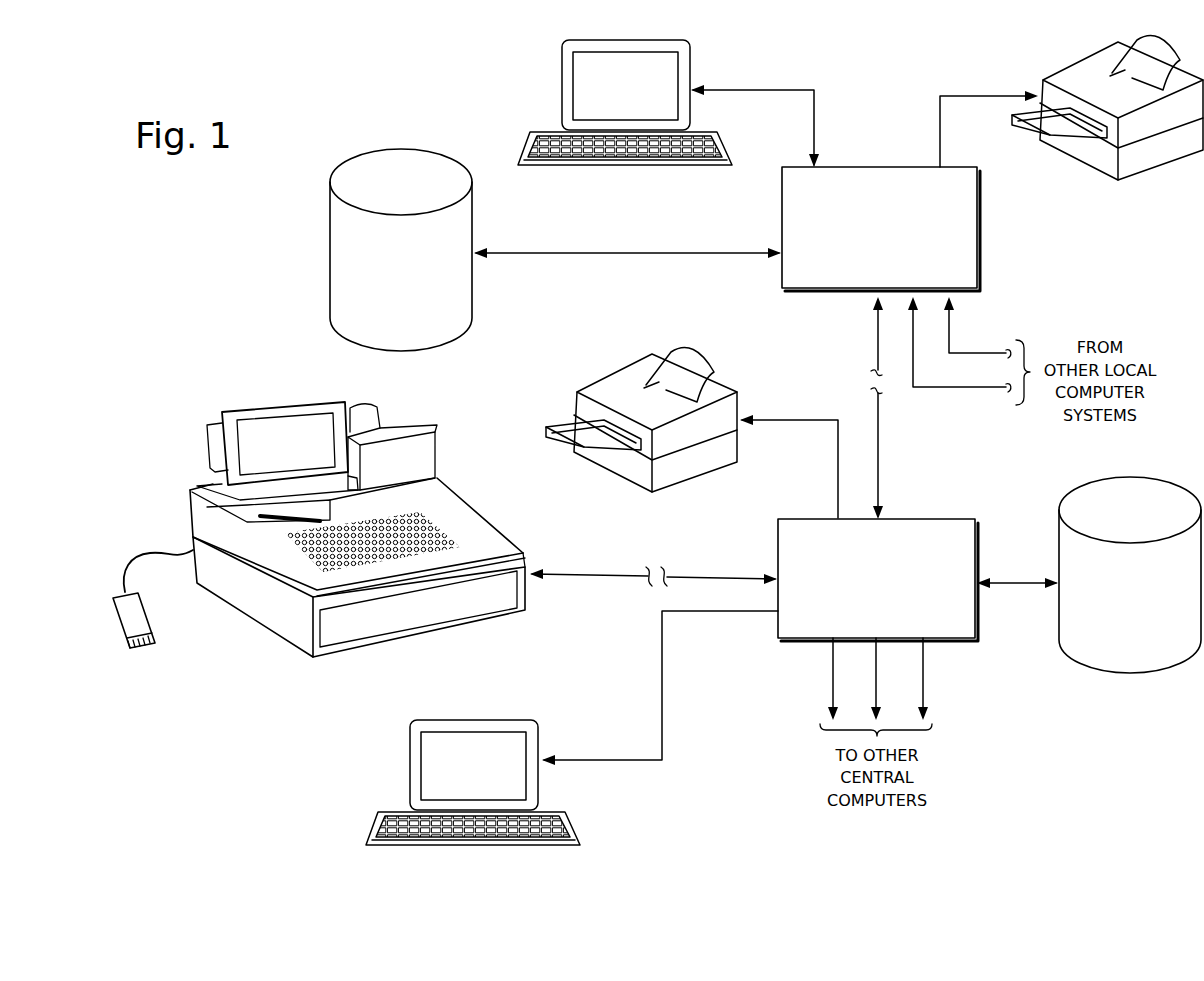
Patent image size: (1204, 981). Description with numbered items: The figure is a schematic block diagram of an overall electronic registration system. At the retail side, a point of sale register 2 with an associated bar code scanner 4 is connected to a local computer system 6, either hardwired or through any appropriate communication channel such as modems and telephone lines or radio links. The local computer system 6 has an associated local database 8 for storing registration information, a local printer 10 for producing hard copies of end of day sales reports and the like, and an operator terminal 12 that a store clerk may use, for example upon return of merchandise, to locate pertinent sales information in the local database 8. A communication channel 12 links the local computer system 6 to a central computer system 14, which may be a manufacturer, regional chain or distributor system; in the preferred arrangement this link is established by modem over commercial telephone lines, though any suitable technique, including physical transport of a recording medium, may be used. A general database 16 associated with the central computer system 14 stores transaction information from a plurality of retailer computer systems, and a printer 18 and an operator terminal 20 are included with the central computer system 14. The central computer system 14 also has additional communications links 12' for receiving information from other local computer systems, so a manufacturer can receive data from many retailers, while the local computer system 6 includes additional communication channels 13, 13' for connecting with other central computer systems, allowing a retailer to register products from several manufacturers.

The point of sale register 2 is at (483, 532).
The bar code scanner 4 is at (147, 630).
The local computer system 6 is at (956, 636).
The local database 8 is at (1058, 548).
The local printer 10 is at (600, 388).
The operator terminal / communication channel 12 is at (636, 571).
The additional communications link 12' is at (959, 362).
The additional communication channel 13 is at (800, 679).
The additional communication channel 13' is at (829, 679).
The central computer system 14 is at (982, 208).
The general database 16 is at (330, 300).
The printer 18 is at (1065, 76).
The operator terminal 20 is at (534, 95).